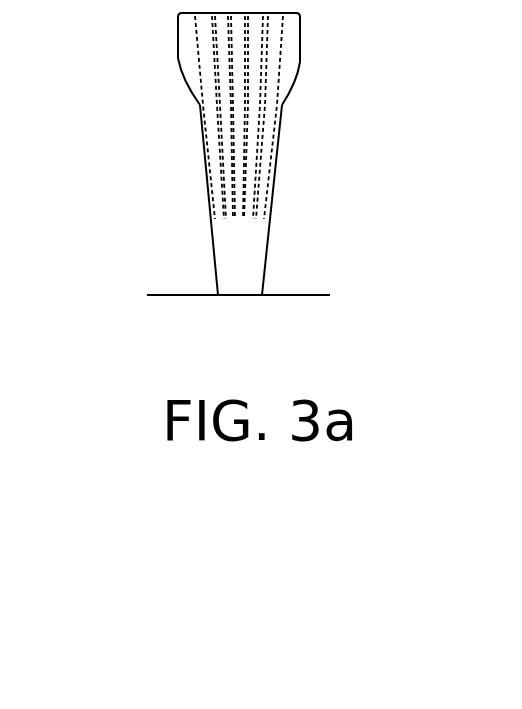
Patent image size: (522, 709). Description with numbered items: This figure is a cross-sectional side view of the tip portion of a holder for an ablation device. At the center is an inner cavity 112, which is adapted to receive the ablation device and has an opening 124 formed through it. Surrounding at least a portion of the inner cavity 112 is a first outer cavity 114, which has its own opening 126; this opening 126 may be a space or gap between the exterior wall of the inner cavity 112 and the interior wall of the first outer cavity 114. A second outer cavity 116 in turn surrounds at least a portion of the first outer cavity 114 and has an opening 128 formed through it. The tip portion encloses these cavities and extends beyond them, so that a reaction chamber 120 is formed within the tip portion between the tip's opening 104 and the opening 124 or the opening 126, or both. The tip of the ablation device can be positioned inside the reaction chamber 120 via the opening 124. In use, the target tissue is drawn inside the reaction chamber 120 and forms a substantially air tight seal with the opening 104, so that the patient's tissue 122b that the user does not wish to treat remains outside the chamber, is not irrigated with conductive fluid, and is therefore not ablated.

The opening 104 is at (237, 296).
The inner cavity 112 is at (237, 100).
The first outer cavity 114 is at (220, 48).
The second outer cavity 116 is at (208, 111).
The reaction chamber 120 is at (238, 272).
The patient's tissue 122b is at (182, 296).
The opening 124 is at (238, 222).
The opening 126 is at (266, 207).
The opening 128 is at (246, 221).